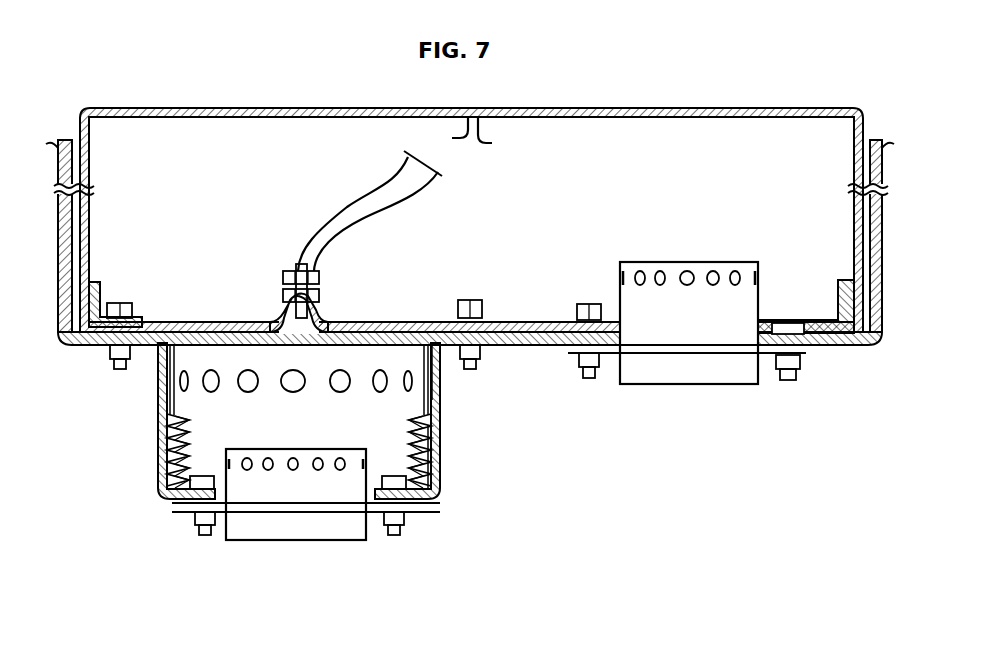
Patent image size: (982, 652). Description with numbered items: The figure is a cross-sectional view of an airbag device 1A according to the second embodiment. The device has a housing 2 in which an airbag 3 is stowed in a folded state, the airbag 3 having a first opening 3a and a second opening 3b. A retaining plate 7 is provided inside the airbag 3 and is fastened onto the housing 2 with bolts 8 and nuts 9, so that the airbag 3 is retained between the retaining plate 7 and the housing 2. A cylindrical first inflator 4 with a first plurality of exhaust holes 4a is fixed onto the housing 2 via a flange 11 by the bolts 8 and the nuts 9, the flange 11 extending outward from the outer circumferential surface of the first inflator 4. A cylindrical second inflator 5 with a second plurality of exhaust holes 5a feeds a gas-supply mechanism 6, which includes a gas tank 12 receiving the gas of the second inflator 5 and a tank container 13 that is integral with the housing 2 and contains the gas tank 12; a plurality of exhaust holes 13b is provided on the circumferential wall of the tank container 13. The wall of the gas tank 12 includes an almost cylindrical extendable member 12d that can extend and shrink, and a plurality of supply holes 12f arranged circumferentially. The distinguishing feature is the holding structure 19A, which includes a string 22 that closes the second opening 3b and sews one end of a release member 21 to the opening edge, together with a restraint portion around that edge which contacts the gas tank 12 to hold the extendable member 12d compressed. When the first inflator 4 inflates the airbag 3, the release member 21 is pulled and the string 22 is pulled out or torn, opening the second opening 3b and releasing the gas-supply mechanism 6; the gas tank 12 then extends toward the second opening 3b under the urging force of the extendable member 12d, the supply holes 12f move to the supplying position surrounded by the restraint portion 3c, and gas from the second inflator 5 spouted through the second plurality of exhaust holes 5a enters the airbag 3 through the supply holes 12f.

The airbag device 1A is at (824, 104).
The housing 2 is at (834, 345).
The airbag 3 is at (89, 224).
The first opening 3a is at (756, 313).
The second opening 3b is at (276, 314).
The restraint portion 3c is at (200, 318).
The first inflator 4 is at (689, 285).
The first plurality of exhaust holes 4a is at (698, 274).
The second inflator 5 is at (296, 536).
The second plurality of exhaust holes 5a is at (268, 470).
The gas-supply mechanism 6 is at (160, 503).
The retaining plate 7 is at (512, 320).
The bolts 8 is at (120, 302).
The nuts 9 is at (112, 366).
The flange 11 is at (356, 512).
The gas tank 12 is at (284, 421).
The extendable member 12d is at (158, 454).
The supply holes 12f is at (245, 392).
The tank container 13 is at (442, 498).
The exhaust holes 13b is at (442, 386).
The holding structure 19A is at (330, 280).
The release member 21 is at (410, 200).
The string 22 is at (288, 284).